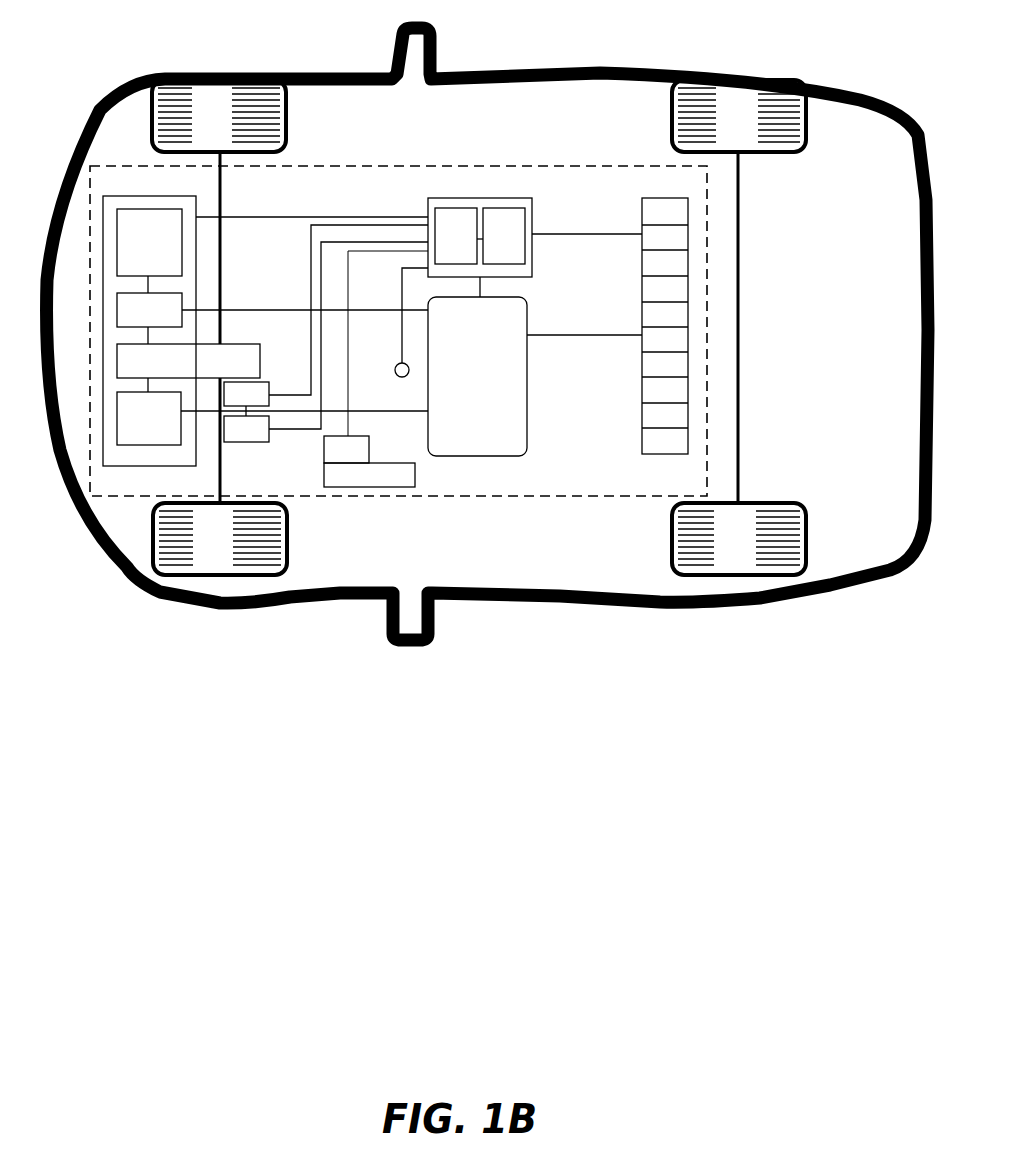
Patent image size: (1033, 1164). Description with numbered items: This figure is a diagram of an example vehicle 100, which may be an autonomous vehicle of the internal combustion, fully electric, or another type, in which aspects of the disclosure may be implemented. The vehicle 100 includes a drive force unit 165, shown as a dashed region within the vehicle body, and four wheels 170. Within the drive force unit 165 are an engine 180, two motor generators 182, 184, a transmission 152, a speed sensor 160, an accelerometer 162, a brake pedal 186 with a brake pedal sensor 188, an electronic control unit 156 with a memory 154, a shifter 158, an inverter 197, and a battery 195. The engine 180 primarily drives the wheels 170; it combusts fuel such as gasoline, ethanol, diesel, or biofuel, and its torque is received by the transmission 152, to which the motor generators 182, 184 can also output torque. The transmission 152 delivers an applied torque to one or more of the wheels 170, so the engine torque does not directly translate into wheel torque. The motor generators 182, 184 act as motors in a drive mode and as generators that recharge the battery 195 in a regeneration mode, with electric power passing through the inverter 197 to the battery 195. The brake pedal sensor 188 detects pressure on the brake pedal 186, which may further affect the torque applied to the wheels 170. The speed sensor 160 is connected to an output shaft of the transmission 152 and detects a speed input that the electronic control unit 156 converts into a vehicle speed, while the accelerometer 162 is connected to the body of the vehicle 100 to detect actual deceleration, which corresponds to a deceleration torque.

The vehicle 100 is at (545, 74).
The drive force unit 165 is at (473, 168).
The wheels 170 is at (197, 123).
The engine 180 is at (135, 252).
The motor generator 182 is at (135, 319).
The transmission 152 is at (175, 370).
The motor generator 184 is at (135, 427).
The speed sensor 160 is at (234, 403).
The accelerometer 162 is at (234, 438).
The brake pedal sensor 188 is at (334, 458).
The brake pedal 186 is at (357, 484).
The electronic control unit 156 is at (444, 245).
The memory 154 is at (492, 245).
The shifter 158 is at (392, 372).
The inverter 197 is at (465, 384).
The battery 195 is at (642, 378).